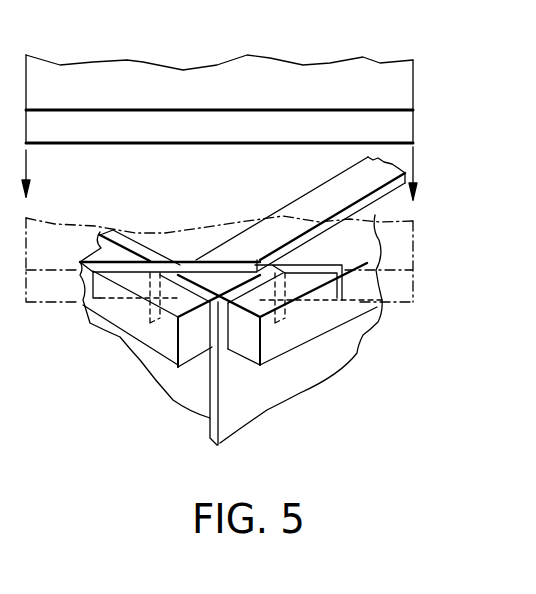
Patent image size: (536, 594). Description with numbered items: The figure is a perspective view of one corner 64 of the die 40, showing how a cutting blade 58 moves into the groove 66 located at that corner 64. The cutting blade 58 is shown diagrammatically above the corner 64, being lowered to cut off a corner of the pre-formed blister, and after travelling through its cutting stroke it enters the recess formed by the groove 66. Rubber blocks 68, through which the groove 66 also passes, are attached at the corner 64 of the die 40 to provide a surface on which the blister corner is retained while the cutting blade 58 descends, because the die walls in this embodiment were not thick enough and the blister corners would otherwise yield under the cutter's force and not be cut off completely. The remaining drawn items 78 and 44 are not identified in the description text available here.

The cutting blade 58 is at (131, 67).
The direction of panel movement 78 is at (196, 198).
The support bar 44 is at (173, 243).
The groove 66 is at (92, 286).
The rubber blocks 68 is at (157, 347).
The corner 64 is at (210, 417).
The die 40 is at (297, 402).